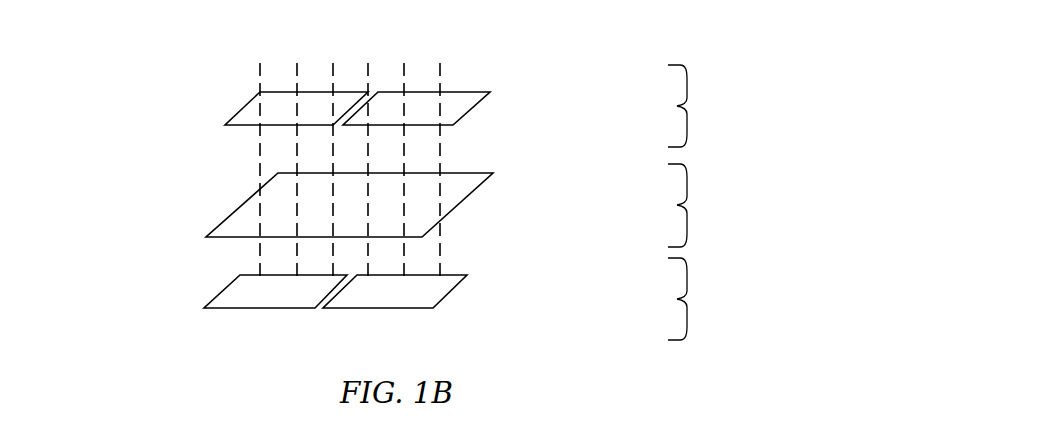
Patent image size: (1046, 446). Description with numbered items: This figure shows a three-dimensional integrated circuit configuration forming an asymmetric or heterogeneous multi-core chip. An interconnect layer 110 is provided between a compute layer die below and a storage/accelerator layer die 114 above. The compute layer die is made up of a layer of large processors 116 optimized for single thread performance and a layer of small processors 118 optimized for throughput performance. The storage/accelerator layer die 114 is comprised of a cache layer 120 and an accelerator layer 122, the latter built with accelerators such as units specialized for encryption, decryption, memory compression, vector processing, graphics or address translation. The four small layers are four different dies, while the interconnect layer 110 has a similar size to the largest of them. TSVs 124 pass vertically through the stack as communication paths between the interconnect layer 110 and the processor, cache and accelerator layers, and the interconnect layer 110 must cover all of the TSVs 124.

The TSVs 124 is at (260, 77).
The cache layer 120 is at (226, 125).
The accelerator layer 122 is at (523, 113).
The storage/accelerator layer die 114 is at (793, 149).
The interconnect layer 110 is at (792, 238).
The large processors 116 is at (204, 307).
The small processors 118 is at (797, 338).